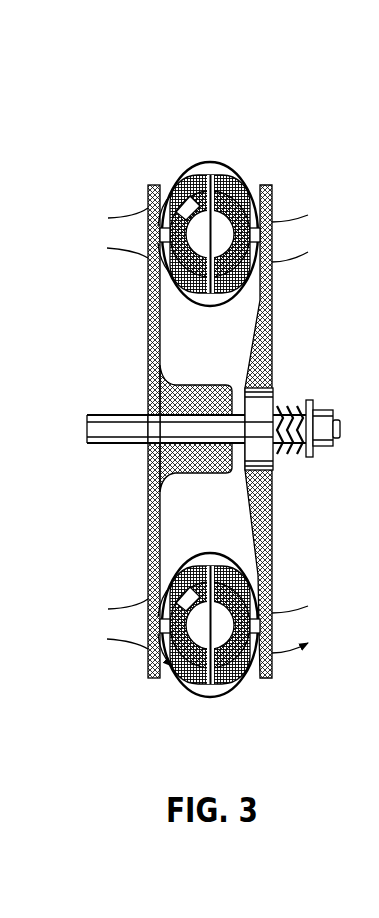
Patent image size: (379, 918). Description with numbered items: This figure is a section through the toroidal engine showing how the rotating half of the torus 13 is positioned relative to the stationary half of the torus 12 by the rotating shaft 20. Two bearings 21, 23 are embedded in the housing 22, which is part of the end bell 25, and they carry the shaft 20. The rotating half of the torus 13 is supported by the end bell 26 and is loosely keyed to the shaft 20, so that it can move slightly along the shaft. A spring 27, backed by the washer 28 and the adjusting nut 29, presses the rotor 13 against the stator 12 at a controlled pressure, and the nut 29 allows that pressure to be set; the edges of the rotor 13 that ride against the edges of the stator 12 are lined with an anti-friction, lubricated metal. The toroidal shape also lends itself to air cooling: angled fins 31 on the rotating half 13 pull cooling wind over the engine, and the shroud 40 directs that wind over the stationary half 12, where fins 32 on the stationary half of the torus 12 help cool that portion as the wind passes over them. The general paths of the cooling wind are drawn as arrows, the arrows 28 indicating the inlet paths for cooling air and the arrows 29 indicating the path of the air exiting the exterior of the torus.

The stationary half of the torus 12 is at (207, 97).
The rotating half of the torus 13 is at (292, 97).
The rotating shaft 20 is at (115, 415).
The bearing 21 is at (150, 443).
The housing 22 is at (205, 383).
The bearing 23 is at (233, 450).
The end bell 25 is at (148, 316).
The end bell 26 is at (274, 560).
The spring 27 is at (292, 458).
The washer 28 is at (308, 453).
The adjusting nut 29 is at (325, 447).
The angled fins 31 is at (233, 173).
The fins 32 is at (188, 182).
The shroud 40 is at (205, 160).